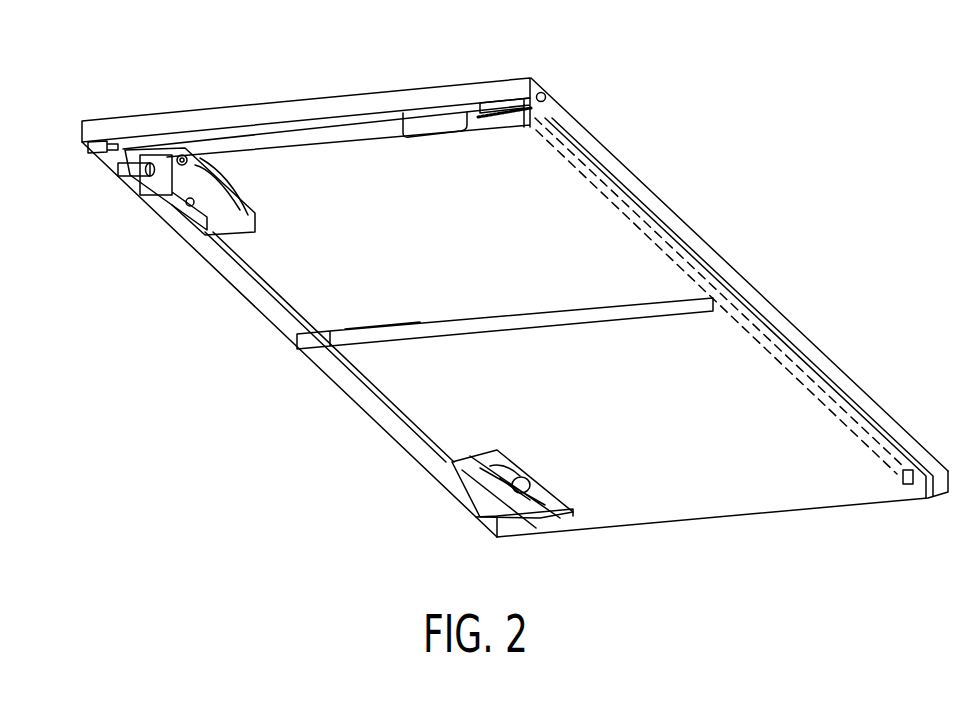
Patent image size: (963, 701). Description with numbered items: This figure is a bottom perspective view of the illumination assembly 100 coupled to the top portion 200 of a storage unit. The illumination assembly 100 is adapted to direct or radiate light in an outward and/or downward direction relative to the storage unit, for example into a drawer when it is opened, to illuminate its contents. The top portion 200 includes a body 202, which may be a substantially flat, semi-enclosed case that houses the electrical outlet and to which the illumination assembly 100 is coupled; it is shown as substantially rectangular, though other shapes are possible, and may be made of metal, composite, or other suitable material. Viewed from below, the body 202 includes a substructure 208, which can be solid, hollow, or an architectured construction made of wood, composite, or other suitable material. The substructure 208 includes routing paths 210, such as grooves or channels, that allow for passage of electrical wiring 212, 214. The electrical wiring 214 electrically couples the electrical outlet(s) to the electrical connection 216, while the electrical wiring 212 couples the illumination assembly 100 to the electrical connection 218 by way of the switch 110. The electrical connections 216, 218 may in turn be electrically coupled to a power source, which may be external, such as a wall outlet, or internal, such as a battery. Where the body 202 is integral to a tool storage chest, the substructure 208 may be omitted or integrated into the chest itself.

The illumination assembly 100 is at (713, 280).
The switch 110 is at (541, 92).
The top portion 200 is at (791, 98).
The body 202 is at (683, 232).
The substructure 208 is at (233, 292).
The routing paths 210 is at (405, 127).
The electrical wiring 212 is at (507, 102).
The electrical wiring 214 is at (477, 477).
The electrical connection 216 is at (122, 170).
The electrical connection 218 is at (105, 141).